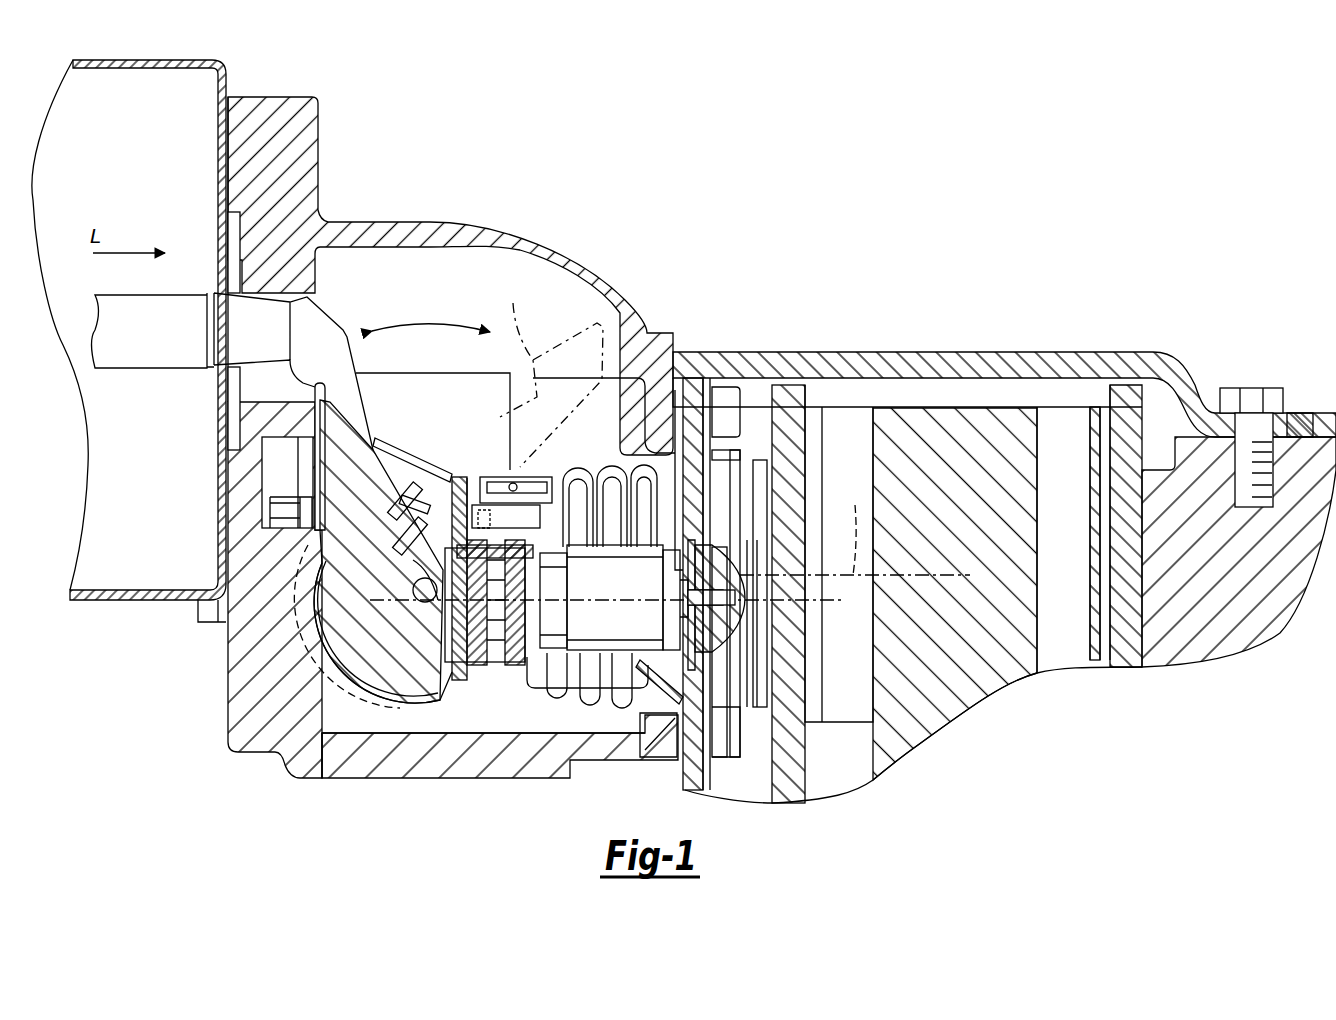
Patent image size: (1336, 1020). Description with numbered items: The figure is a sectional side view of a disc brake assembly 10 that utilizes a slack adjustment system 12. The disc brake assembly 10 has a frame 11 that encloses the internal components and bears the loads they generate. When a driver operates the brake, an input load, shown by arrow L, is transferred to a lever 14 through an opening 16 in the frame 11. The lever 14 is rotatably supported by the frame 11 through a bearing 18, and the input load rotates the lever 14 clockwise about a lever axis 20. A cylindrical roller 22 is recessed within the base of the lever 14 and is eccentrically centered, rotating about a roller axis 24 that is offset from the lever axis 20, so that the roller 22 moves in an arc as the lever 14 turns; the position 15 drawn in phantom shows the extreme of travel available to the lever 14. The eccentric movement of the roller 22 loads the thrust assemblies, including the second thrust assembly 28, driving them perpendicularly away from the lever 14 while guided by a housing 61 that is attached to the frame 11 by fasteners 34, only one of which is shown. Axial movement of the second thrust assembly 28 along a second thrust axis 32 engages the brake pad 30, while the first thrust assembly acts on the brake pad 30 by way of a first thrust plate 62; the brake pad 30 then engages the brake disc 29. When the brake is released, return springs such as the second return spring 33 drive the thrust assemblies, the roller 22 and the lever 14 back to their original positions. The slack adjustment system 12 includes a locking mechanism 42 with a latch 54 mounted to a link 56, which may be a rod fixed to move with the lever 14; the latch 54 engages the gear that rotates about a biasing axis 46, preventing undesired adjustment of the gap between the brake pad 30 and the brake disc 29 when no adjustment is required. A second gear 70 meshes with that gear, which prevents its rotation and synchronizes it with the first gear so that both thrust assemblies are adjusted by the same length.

The disc brake assembly 10 is at (785, 222).
The frame 11 is at (455, 222).
The slack adjustment system 12 is at (521, 744).
The lever 14 is at (348, 512).
The position 15 is at (518, 340).
The opening 16 is at (263, 283).
The bearing 18 is at (340, 667).
The lever axis 20 is at (417, 603).
The cylindrical roller 22 is at (409, 518).
The roller axis 24 is at (418, 585).
The second thrust assembly 28 is at (448, 486).
The brake disc 29 is at (1003, 437).
The brake pad 30 is at (845, 427).
The second thrust axis 32 is at (851, 524).
The second return spring 33 is at (620, 470).
The fasteners 34 is at (724, 398).
The locking mechanism 42 is at (527, 470).
The biasing axis 46 is at (642, 633).
The latch 54 is at (576, 477).
The link 56 is at (400, 448).
The housing 61 is at (693, 413).
The first thrust plate 62 is at (757, 428).
The second gear 70 is at (472, 470).